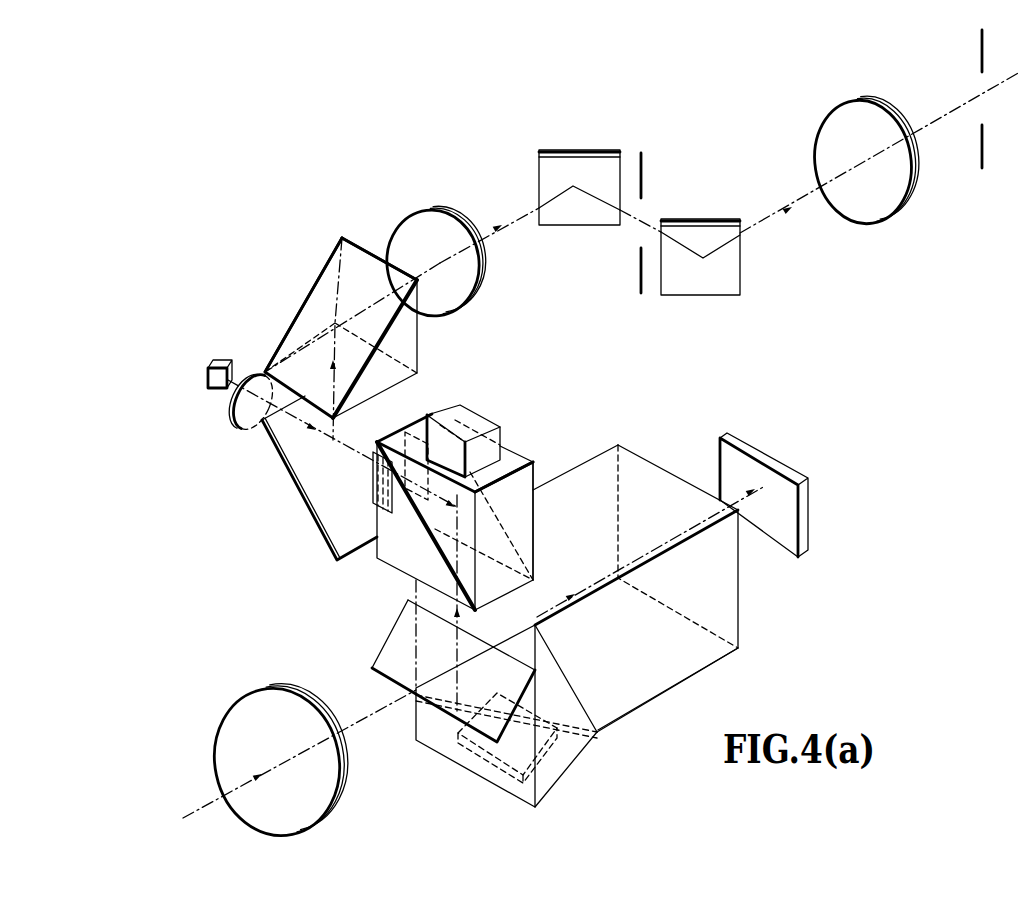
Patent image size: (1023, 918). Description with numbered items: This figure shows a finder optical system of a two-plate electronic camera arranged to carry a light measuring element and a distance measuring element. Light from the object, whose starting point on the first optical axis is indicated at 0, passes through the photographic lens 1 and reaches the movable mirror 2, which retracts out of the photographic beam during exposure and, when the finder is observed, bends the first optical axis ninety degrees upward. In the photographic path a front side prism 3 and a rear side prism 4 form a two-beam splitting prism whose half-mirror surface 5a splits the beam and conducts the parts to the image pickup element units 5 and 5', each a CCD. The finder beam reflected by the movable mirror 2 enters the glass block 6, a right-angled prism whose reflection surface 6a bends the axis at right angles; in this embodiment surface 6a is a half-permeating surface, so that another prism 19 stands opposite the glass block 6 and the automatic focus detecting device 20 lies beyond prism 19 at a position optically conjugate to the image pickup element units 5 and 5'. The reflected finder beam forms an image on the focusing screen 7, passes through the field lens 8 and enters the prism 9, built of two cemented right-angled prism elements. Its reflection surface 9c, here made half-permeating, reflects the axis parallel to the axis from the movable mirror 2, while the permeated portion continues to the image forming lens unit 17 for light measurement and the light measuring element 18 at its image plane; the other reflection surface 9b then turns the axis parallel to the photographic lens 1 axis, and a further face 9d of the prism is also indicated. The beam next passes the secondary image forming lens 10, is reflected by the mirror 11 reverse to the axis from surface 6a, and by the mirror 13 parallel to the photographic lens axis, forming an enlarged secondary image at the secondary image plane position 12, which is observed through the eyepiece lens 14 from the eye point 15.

The optical axis / object point 0 is at (203, 810).
The photographic lens 1 is at (273, 826).
The movable mirror 2 is at (378, 657).
The front side prism 3 is at (563, 770).
The rear side prism 4 is at (635, 703).
The image pickup element unit 5 is at (782, 495).
The half-mirror surface 5a is at (573, 697).
The image pickup element unit 5' is at (507, 763).
The glass block 6 is at (390, 567).
The reflection surface 6a is at (520, 546).
The focusing screen 7 is at (415, 440).
The field lens 8 is at (403, 448).
The prism 9 is at (412, 338).
The reflection surface 9b is at (312, 308).
The reflection surface 9c is at (307, 503).
The surface of cube 9d is at (385, 258).
The secondary image forming lens 10 is at (438, 233).
The mirror 11 is at (572, 163).
The secondary image plane position 12 is at (641, 187).
The mirror 13 is at (700, 290).
The eyepiece lens 14 is at (880, 217).
The eye point 15 is at (982, 157).
The image forming lens unit 17 is at (250, 430).
The light measuring element 18 is at (208, 380).
The prism 19 is at (537, 467).
The automatic focus detecting device 20 is at (478, 413).